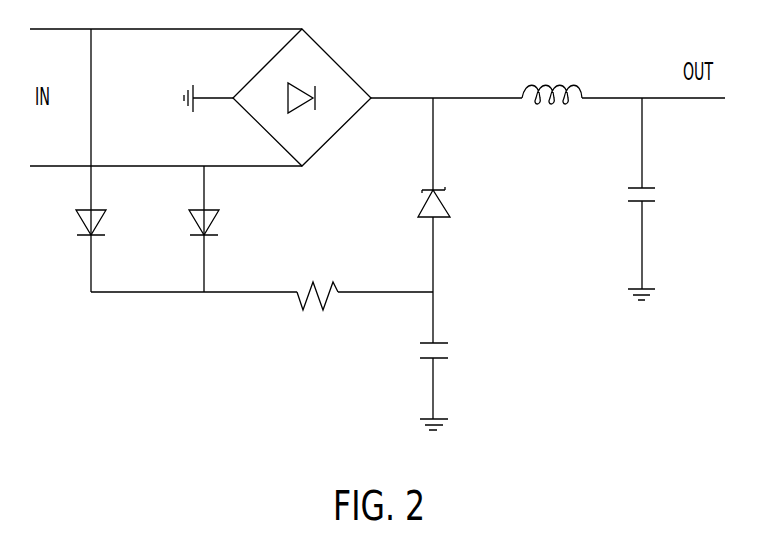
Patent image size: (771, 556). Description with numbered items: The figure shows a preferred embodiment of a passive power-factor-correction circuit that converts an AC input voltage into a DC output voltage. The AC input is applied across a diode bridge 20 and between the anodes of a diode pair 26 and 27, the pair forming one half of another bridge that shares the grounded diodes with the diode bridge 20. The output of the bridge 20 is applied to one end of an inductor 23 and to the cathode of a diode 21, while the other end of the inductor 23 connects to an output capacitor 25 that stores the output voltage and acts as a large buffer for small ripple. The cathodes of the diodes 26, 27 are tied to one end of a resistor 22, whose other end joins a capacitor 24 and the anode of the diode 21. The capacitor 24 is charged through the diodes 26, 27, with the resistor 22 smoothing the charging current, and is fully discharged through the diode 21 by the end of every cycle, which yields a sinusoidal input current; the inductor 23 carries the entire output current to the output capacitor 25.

The diode bridge 20 is at (328, 55).
The diode 21 is at (445, 203).
The resistor 22 is at (321, 318).
The inductor 23 is at (558, 84).
The capacitor 24 is at (447, 343).
The output capacitor 25 is at (650, 188).
The diode 26 is at (100, 222).
The diode 27 is at (213, 222).